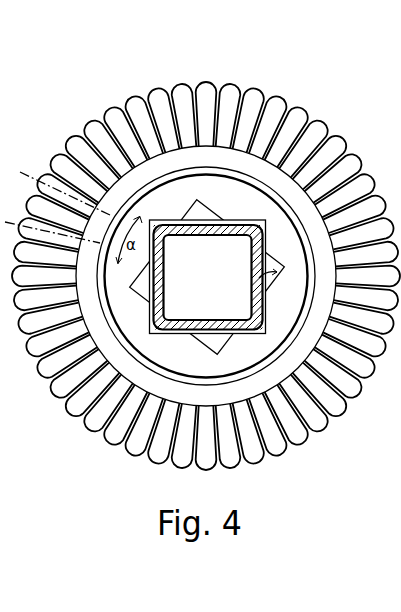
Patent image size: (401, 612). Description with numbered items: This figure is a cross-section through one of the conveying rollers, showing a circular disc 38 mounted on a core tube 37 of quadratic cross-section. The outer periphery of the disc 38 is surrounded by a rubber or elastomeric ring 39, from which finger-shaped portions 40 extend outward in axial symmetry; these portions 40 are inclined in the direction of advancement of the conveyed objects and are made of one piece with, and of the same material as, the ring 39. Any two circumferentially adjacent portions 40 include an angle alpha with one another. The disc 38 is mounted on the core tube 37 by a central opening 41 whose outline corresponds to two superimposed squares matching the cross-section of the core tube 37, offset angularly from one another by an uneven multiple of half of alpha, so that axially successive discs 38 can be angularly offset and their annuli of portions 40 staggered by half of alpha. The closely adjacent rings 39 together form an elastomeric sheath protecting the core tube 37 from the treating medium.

The core tube 37 is at (257, 230).
The circular disc 38 is at (284, 247).
The elastomeric ring 39 is at (252, 167).
The finger-shaped portions 40 is at (203, 92).
The central opening 41 is at (259, 279).